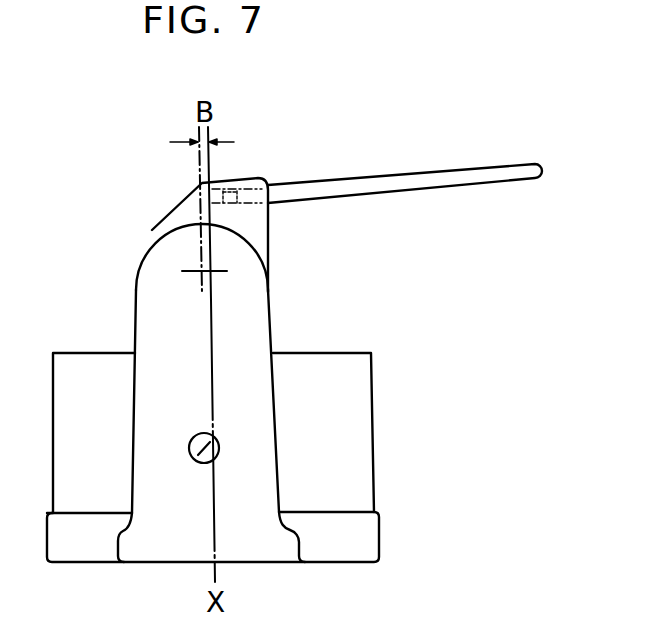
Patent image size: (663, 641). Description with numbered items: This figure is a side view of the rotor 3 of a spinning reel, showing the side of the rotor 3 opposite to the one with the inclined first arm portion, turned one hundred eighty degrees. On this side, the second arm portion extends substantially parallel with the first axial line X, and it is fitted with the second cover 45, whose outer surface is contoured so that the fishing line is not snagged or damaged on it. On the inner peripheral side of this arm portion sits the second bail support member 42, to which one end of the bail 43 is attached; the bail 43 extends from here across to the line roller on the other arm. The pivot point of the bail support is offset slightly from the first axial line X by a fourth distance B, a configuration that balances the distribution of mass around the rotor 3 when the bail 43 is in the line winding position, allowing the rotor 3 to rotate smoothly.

The rotor 3 is at (372, 388).
The second bail support member 42 is at (187, 202).
The bail 43 is at (460, 175).
The second cover 45 is at (262, 307).